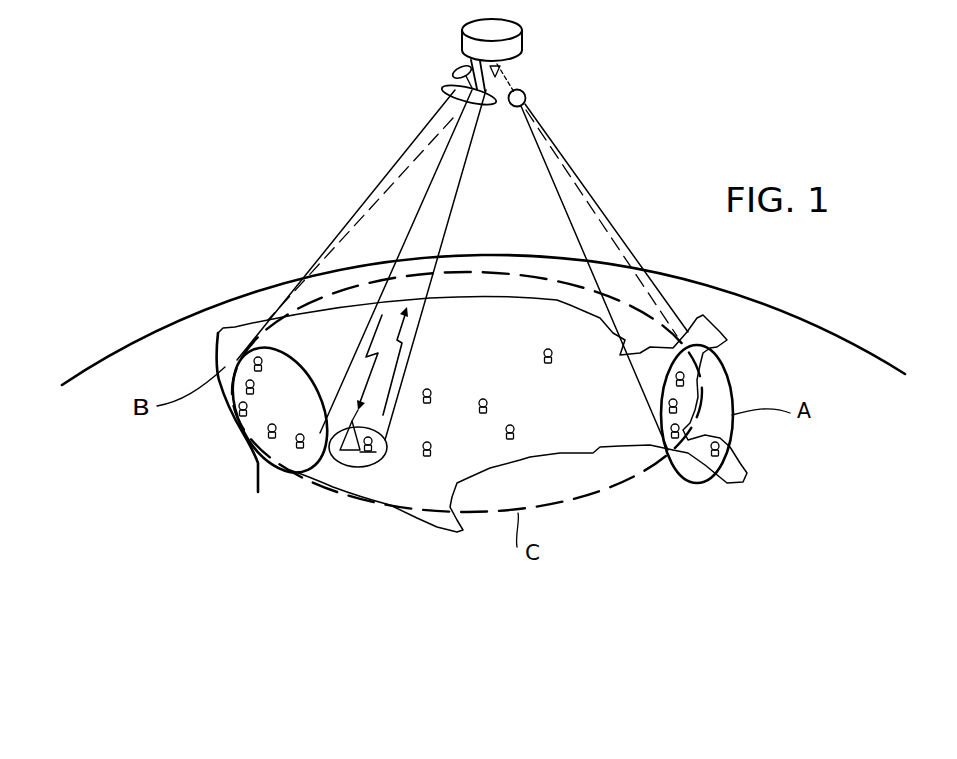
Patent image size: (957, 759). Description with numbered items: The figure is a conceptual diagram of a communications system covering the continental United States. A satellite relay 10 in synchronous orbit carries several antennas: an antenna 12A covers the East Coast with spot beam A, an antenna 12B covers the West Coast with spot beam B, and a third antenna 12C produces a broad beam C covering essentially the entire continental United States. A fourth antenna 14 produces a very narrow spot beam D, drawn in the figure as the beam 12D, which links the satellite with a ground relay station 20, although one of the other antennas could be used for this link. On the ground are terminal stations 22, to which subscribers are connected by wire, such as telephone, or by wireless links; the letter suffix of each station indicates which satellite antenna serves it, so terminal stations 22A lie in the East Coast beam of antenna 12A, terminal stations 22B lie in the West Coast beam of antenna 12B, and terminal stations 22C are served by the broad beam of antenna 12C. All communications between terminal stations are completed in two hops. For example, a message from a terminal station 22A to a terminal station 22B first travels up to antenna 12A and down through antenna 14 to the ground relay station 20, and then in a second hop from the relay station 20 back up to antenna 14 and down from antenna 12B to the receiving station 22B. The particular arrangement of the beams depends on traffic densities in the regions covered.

The satellite relay 10 is at (546, 79).
The antenna 12A is at (527, 99).
The antenna 12B is at (415, 131).
The third antenna 12C is at (500, 78).
The satellite beam to ground relay station 12D is at (425, 197).
The fourth antenna 14 is at (446, 88).
The ground relay station 20 is at (353, 468).
The ground terminal stations 22 is at (373, 617).
The terminal station 22A is at (686, 380).
The terminal station 22B is at (275, 470).
The terminal station 22C is at (426, 457).